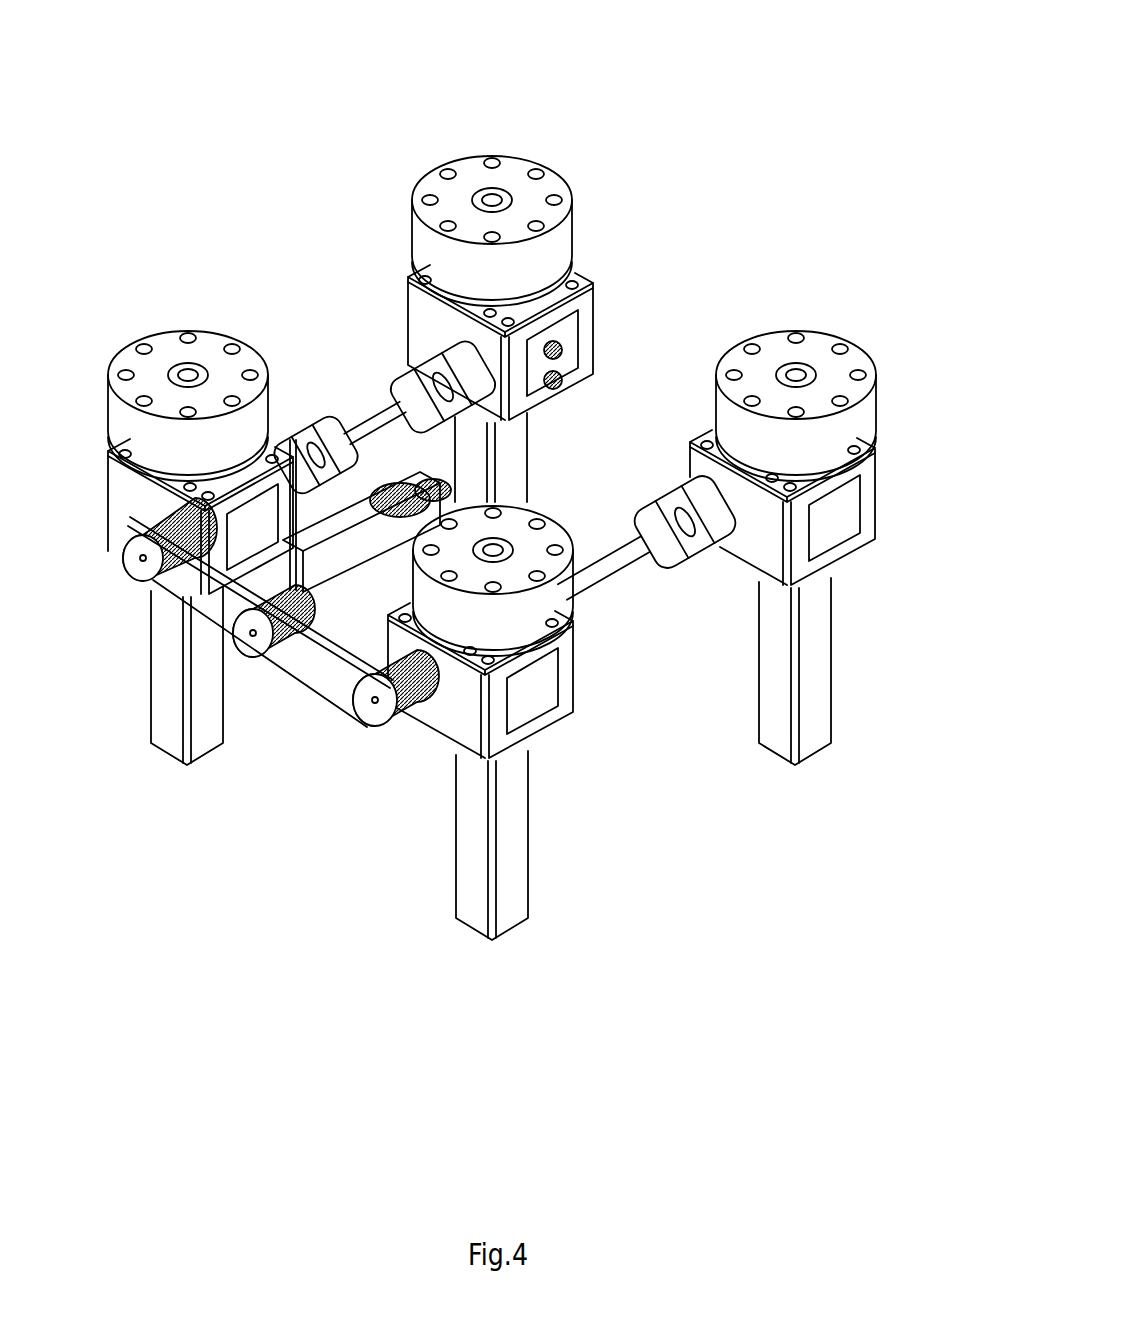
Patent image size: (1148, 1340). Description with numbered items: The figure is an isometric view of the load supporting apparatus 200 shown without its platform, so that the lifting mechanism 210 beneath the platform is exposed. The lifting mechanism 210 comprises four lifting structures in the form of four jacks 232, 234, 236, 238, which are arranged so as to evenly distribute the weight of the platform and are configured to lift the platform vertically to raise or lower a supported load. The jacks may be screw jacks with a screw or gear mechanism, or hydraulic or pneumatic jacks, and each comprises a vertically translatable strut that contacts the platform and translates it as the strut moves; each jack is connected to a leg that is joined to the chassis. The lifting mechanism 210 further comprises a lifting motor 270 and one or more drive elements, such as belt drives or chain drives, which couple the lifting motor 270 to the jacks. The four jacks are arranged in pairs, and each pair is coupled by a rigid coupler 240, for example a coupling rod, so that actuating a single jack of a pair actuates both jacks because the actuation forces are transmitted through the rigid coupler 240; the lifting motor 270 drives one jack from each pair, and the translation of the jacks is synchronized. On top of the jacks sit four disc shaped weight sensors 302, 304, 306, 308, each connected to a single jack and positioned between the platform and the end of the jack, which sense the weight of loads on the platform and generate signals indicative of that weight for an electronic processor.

The load supporting apparatus 200 is at (647, 402).
The lifting mechanism 210 is at (740, 735).
The jack 232 is at (120, 495).
The jack 234 is at (582, 300).
The jack 236 is at (828, 497).
The jack 238 is at (452, 695).
The rigid coupler 240 is at (377, 423).
The lifting motor 270 is at (360, 568).
The weight sensor 302 is at (158, 357).
The weight sensor 304 is at (510, 182).
The weight sensor 306 is at (758, 380).
The weight sensor 308 is at (528, 597).